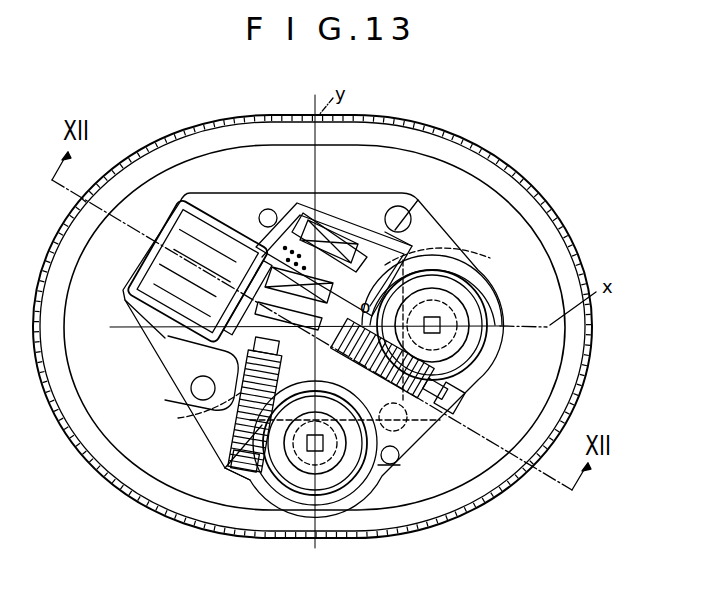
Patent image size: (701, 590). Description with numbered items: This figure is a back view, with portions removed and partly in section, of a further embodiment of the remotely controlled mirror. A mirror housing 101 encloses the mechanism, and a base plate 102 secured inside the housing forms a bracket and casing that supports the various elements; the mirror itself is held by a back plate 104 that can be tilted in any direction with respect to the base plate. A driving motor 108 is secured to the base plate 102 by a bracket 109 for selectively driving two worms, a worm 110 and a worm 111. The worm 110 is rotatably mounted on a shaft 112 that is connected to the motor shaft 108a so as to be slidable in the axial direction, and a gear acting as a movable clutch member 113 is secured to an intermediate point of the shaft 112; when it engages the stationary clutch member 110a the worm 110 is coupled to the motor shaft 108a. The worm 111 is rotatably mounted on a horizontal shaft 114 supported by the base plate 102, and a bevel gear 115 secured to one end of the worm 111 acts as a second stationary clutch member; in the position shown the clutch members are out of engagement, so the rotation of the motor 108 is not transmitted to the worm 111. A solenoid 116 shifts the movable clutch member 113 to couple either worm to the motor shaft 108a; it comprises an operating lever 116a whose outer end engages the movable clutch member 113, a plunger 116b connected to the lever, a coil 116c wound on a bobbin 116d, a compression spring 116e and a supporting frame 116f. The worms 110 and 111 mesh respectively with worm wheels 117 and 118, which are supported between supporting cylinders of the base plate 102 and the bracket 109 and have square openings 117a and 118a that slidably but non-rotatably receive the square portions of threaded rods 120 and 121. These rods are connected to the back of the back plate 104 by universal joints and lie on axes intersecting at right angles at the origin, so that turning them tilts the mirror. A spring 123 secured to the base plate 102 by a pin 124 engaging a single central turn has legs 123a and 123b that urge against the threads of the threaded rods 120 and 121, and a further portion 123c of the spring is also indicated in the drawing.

The mirror housing 101 is at (515, 168).
The base plate 102 is at (447, 247).
The back plate 104 is at (538, 248).
The driving motor 108 is at (202, 274).
The motor shaft 108a is at (214, 254).
The bracket 109 is at (172, 337).
The worm 110 is at (392, 363).
The stationary clutch member 110a is at (408, 428).
The worm 111 is at (213, 437).
The shaft 112 is at (265, 330).
The movable clutch member 113 is at (412, 250).
The horizontal shaft 114 is at (210, 413).
The bevel gear 115 is at (227, 427).
The solenoid 116 is at (300, 203).
The operating lever 116a is at (405, 212).
The plunger 116b is at (372, 235).
The coil 116c is at (348, 225).
The bobbin 116d is at (306, 214).
The compression spring 116e is at (287, 257).
The supporting frame 116f is at (273, 257).
The worm wheel 117 is at (462, 303).
The square opening 117a is at (447, 318).
The worm wheel 118 is at (324, 485).
The square opening 118a is at (345, 478).
The threaded rod 120 is at (440, 335).
The threaded rod 121 is at (306, 470).
The spring 123 is at (404, 470).
The leg 123a is at (453, 257).
The leg 123b is at (255, 466).
The plate portion 123c is at (449, 398).
The pin 124 is at (412, 445).